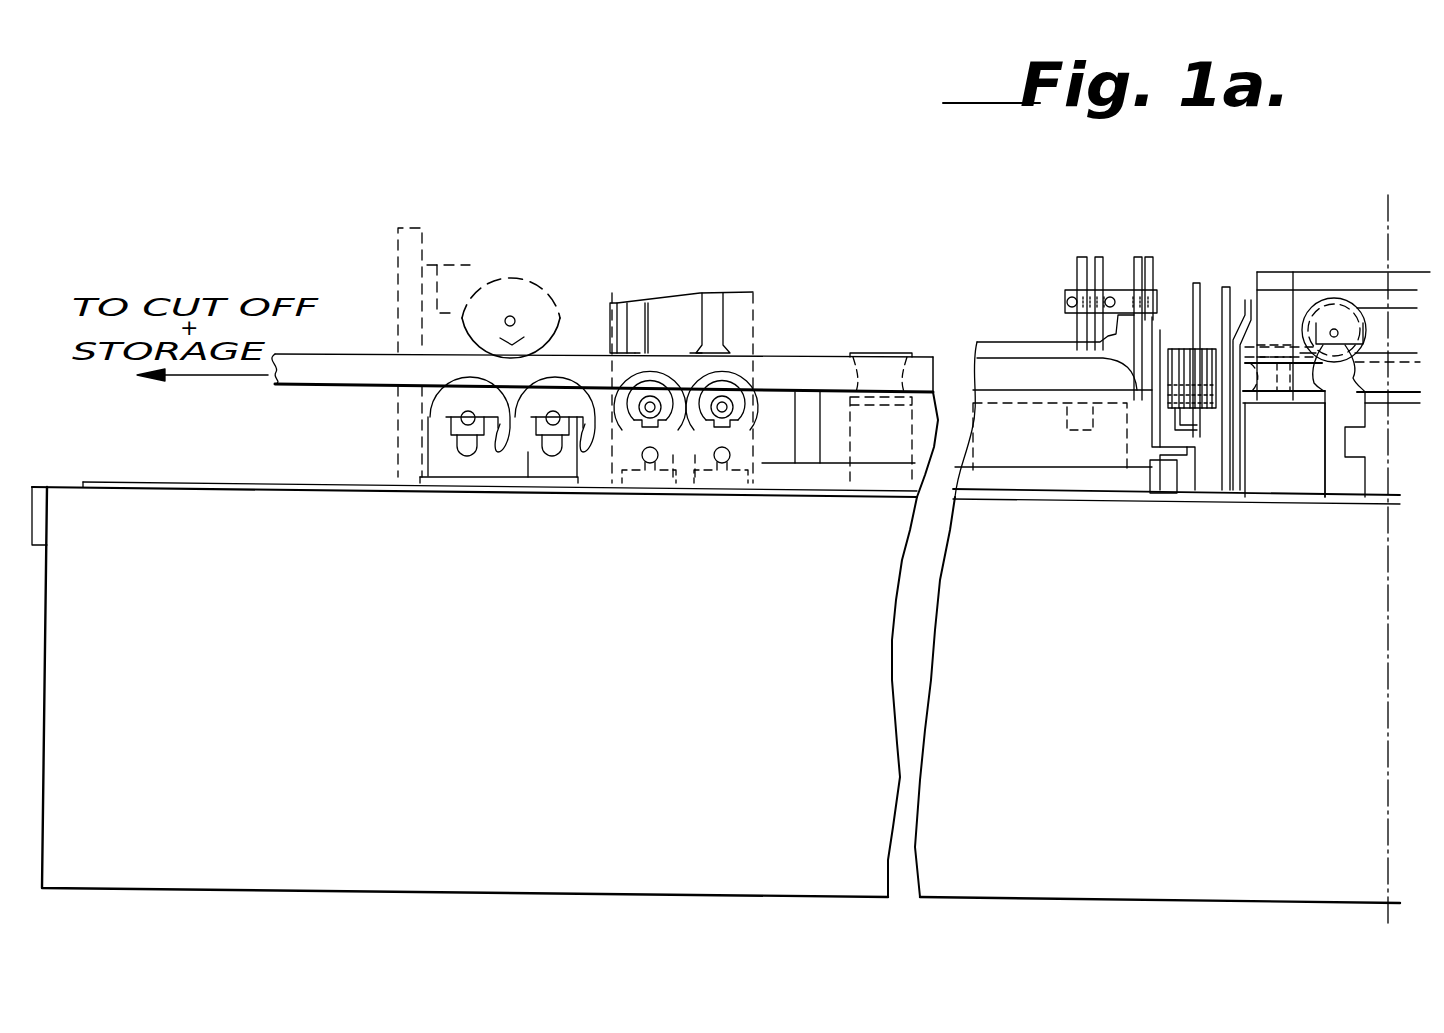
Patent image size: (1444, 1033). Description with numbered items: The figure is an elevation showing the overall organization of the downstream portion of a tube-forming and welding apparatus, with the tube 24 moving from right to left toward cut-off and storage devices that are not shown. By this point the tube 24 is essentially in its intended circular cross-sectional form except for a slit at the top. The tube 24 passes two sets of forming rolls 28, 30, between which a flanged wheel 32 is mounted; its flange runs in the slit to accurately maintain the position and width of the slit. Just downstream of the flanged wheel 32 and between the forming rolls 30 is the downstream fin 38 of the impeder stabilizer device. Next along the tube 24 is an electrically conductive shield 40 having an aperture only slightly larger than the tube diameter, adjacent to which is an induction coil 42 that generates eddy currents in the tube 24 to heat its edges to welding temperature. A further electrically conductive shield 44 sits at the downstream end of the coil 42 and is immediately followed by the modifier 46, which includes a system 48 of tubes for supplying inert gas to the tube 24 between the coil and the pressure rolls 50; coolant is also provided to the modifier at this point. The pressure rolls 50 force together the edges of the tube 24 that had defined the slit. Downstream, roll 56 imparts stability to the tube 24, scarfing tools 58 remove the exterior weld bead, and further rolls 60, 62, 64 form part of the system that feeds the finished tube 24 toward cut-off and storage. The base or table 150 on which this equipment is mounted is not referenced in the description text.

The table/frame 150 is at (230, 483).
The tube 24 is at (340, 373).
The roll 64 is at (490, 331).
The roll 62 is at (448, 406).
The roll 60 is at (538, 407).
The scarfing tools 58 is at (611, 338).
The roll 56 is at (873, 353).
The pressure rolls 50 is at (1043, 382).
The modifier 46 is at (1128, 370).
The shield 44 is at (1146, 447).
The system of tubes 48 is at (1129, 207).
The induction coil 42 is at (1208, 418).
The electrically conductive shield 40 is at (1225, 468).
The downstream fin 38 is at (1271, 295).
The flanged wheel 32 is at (1332, 298).
The forming rolls 30 is at (1293, 408).
The forming rolls 28 is at (1388, 400).